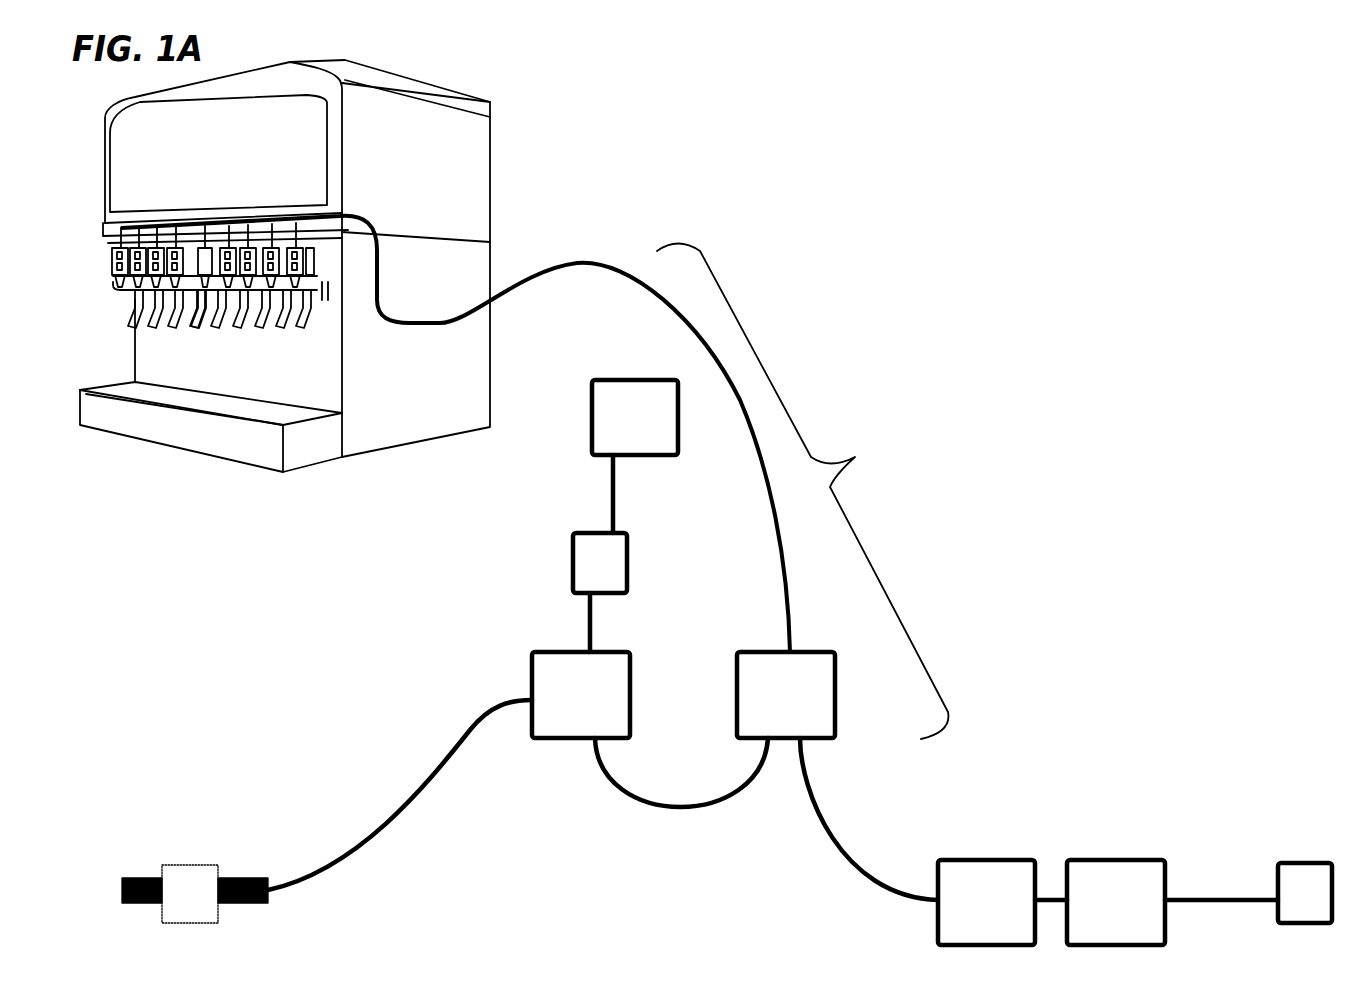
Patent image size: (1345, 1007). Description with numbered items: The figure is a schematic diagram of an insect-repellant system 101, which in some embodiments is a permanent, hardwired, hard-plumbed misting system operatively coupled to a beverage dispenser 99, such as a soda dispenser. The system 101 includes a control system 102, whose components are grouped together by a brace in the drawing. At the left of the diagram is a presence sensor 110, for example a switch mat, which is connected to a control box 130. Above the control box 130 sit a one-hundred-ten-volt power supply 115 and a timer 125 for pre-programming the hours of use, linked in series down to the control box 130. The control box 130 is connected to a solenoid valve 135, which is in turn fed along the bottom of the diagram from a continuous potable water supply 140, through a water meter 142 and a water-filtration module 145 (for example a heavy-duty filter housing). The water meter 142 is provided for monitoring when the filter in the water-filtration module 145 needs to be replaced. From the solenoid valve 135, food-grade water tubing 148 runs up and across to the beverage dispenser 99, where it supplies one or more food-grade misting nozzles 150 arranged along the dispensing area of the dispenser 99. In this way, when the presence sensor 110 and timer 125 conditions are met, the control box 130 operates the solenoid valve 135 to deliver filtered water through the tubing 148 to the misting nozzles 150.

The beverage dispenser 99 is at (490, 170).
The insect-repellant system 101 is at (1266, 66).
The control system 102 is at (802, 492).
The presence sensor 110 is at (195, 865).
The 110-volt power supply 115 is at (607, 380).
The timer 125 is at (628, 560).
The control box 130 is at (630, 682).
The solenoid valve 135 is at (807, 650).
The continuous potable water supply 140 is at (1300, 863).
The water meter 142 is at (1120, 860).
The water-filtration module 145 is at (985, 860).
The water tubing 148 is at (586, 262).
The misting nozzles 150 is at (214, 312).